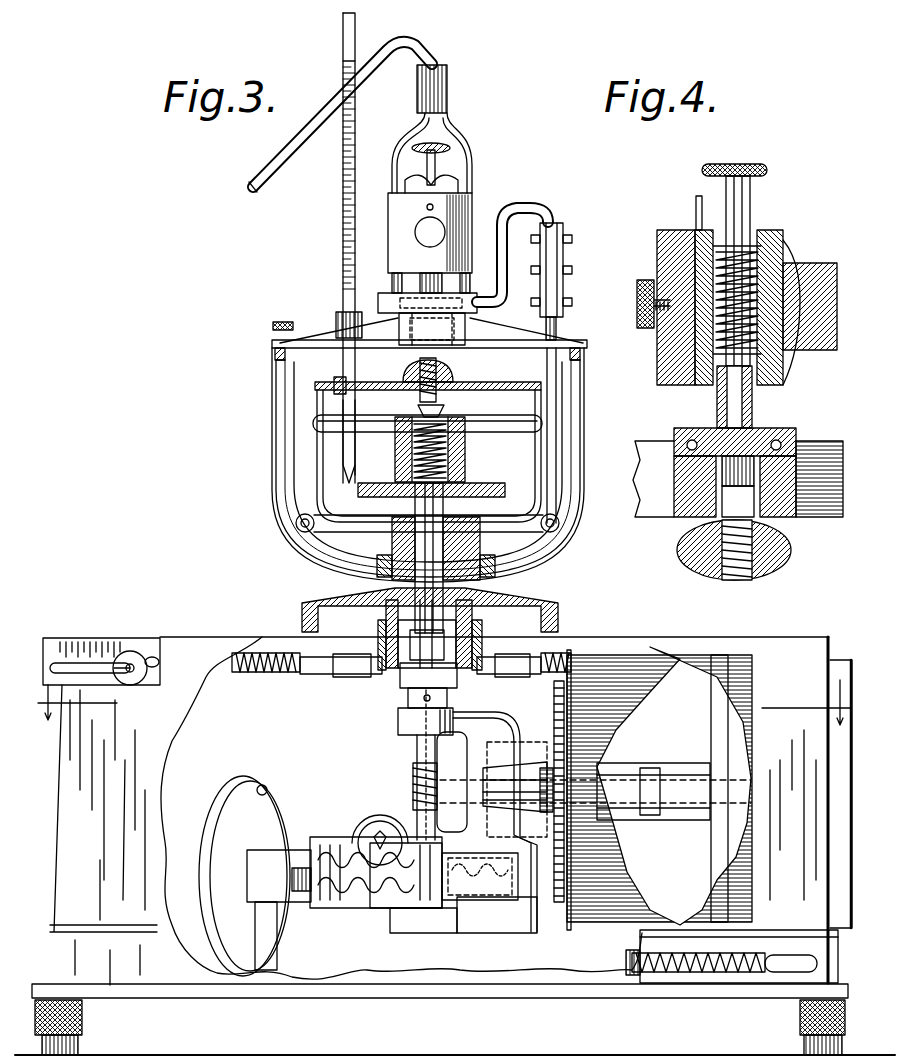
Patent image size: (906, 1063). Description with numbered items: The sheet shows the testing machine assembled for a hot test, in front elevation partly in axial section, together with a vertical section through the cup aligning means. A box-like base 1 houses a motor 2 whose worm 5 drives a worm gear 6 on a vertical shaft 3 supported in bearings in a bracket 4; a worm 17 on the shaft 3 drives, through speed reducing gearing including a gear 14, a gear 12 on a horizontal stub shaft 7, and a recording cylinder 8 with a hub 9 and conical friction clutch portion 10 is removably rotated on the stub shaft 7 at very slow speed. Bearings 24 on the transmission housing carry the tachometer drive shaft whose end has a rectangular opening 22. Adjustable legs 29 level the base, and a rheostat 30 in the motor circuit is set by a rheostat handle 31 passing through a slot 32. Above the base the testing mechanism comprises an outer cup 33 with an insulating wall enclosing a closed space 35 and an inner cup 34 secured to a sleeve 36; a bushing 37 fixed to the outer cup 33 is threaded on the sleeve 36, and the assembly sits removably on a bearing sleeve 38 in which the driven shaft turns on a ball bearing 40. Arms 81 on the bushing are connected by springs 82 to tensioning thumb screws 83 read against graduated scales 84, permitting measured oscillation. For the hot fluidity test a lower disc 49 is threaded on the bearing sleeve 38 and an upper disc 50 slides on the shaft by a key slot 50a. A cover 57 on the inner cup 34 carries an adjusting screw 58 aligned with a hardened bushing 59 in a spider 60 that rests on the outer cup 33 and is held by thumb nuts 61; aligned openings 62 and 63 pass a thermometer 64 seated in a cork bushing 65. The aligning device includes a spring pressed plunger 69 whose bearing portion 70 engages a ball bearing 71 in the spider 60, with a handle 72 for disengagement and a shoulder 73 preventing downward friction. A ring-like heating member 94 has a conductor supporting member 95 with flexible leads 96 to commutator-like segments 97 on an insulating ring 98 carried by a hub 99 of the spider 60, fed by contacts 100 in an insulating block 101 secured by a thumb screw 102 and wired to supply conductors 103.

In FIG. 3, the box-like base 1 is at (188, 637).
In FIG. 3, the motor 2 is at (220, 775).
In FIG. 3, the vertical shaft 3 is at (417, 748).
In FIG. 3, the bracket 4 is at (508, 712).
In FIG. 3, the worm 5 is at (338, 913).
In FIG. 3, the worm gear 6 is at (490, 885).
In FIG. 3, the stub shaft 7 is at (688, 790).
In FIG. 3, the recording cylinder 8 is at (569, 915).
In FIG. 3, the hub 9 is at (730, 800).
In FIG. 3, the conical friction clutch portion 10 is at (605, 800).
In FIG. 3, the gear 12 is at (554, 690).
In FIG. 3, the gear 14 is at (547, 742).
In FIG. 3, the worm 17 is at (413, 777).
In FIG. 3, the rectangular opening 22 is at (376, 875).
In FIG. 3, the bearings 24 is at (362, 835).
In FIG. 3, the adjustable legs 29 is at (84, 1021).
In FIG. 3, the rheostat 30 is at (710, 975).
In FIG. 3, the rheostat handle 31 is at (780, 968).
In FIG. 3, the slot 32 is at (658, 975).
In FIG. 3, the outer cup 33 is at (580, 455).
In FIG. 3, the inner cup 34 is at (545, 425).
In FIG. 3, the closed space 35 is at (545, 505).
In FIG. 3, the sleeve 36 is at (490, 562).
In FIG. 3, the bushing 37 is at (380, 560).
In FIG. 3, the bearing sleeve 38 is at (445, 528).
In FIG. 3, the ball bearing 40 is at (460, 630).
In FIG. 3, the lower disc 49 is at (480, 490).
In FIG. 3, the upper disc 50 is at (478, 483).
In FIG. 3, the key slot 50a is at (398, 470).
In FIG. 3, the cover 57 is at (503, 382).
In FIG. 3, the adjusting screw 58 is at (440, 395).
In FIG. 4, the adjusting screw 58 is at (750, 578).
In FIG. 4, the hardened bushing 59 is at (756, 500).
In FIG. 3, the spider 60 is at (565, 325).
In FIG. 3, the thumb nuts 61 is at (283, 327).
In FIG. 3, the opening 62 is at (342, 392).
In FIG. 3, the opening 63 is at (345, 325).
In FIG. 3, the thermometer 64 is at (343, 228).
In FIG. 3, the cork bushing 65 is at (360, 388).
In FIG. 3, the spring pressed plunger 69 is at (438, 270).
In FIG. 4, the spring pressed plunger 69 is at (755, 408).
In FIG. 4, the bearing portion 70 is at (780, 430).
In FIG. 4, the ball bearing 71 is at (797, 450).
In FIG. 3, the handle 72 is at (450, 148).
In FIG. 4, the handle 72 is at (760, 170).
In FIG. 4, the shoulder 73 is at (762, 330).
In FIG. 3, the arms 81 is at (360, 676).
In FIG. 3, the springs 82 is at (265, 672).
In FIG. 3, the tensioning thumb screws 83 is at (132, 652).
In FIG. 3, the graduated scales 84 is at (60, 660).
In FIG. 3, the ring-like heating member 94 is at (562, 540).
In FIG. 3, the conductor supporting member 95 is at (510, 345).
In FIG. 3, the flexible leads 96 is at (518, 208).
In FIG. 3, the commutator-like segments 97 is at (395, 280).
In FIG. 3, the insulating ring 98 is at (385, 300).
In FIG. 3, the hub 99 is at (458, 330).
In FIG. 3, the contacts 100 is at (445, 285).
In FIG. 3, the insulating block 101 is at (470, 190).
In FIG. 4, the insulating block 101 is at (660, 385).
In FIG. 3, the thumb screw 102 is at (432, 232).
In FIG. 4, the thumb screw 102 is at (645, 330).
In FIG. 3, the supply conductors 103 is at (380, 87).